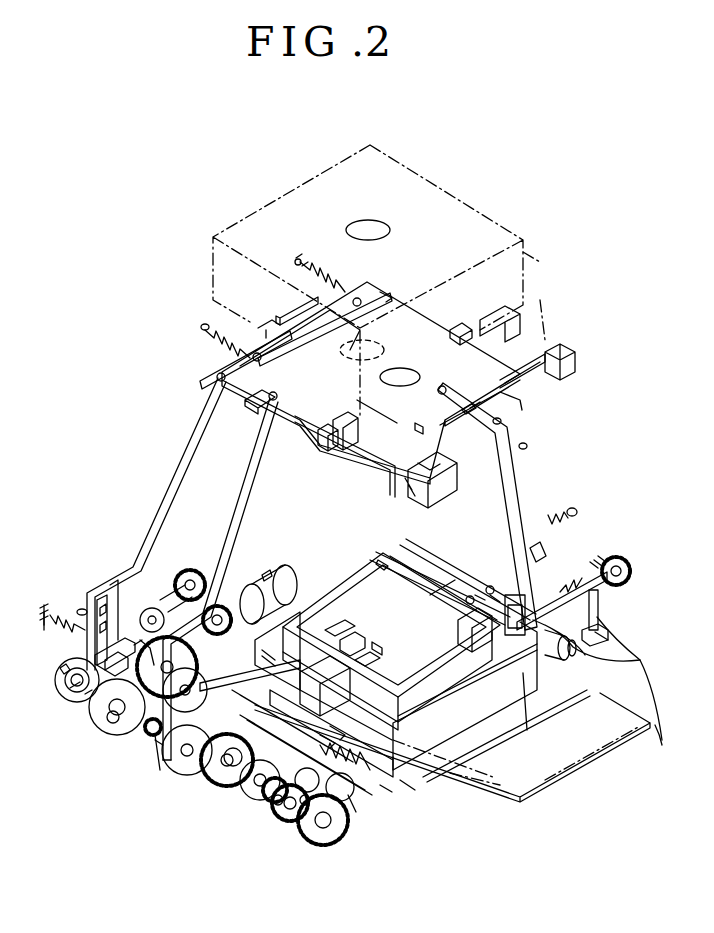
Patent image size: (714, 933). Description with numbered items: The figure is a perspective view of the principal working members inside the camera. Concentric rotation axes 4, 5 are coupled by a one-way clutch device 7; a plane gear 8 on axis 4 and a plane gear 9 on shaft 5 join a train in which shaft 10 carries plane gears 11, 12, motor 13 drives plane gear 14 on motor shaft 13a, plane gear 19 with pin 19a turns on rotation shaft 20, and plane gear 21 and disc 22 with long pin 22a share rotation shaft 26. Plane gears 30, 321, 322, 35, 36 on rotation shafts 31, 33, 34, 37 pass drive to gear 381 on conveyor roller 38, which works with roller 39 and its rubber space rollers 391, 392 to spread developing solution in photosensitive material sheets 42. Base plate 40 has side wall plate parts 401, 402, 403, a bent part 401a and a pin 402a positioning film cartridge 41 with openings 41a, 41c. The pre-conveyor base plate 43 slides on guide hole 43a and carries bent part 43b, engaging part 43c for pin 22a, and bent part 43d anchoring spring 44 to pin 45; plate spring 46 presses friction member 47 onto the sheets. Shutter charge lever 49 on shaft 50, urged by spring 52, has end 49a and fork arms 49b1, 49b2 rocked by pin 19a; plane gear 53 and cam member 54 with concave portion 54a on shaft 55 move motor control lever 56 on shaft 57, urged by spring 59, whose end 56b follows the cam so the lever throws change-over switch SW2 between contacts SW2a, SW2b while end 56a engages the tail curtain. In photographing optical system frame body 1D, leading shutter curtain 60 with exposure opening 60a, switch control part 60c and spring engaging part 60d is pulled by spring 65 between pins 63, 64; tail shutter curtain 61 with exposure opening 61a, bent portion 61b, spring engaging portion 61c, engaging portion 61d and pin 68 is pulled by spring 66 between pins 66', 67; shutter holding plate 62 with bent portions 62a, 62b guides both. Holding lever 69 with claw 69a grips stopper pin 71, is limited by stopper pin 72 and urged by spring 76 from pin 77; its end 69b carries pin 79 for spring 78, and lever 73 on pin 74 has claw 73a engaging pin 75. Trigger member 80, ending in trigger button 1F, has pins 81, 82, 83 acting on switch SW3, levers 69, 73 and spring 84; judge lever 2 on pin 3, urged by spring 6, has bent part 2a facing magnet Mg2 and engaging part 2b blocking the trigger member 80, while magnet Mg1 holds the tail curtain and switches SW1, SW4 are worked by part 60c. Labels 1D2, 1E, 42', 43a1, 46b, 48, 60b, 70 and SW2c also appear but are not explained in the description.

The photographing optical system frame body 1D is at (524, 254).
The opening in housing 1D2 is at (368, 232).
The housing wall 1E is at (540, 318).
The trigger button 1F is at (630, 571).
The judge lever 2 is at (510, 740).
The bent part 2a is at (448, 700).
The engaging part 2b is at (674, 737).
The pin 3 is at (440, 595).
The rotation axis 4 is at (85, 700).
The rotation axis 5 is at (185, 685).
The spring 6 is at (527, 732).
The one-way clutch device 7 is at (150, 668).
The plane gear 8 is at (105, 708).
The plane gear 9 is at (182, 652).
The shaft 10 is at (172, 598).
The plane gear 11 is at (150, 610).
The plane gear 12 is at (193, 572).
The motor 13 is at (272, 602).
The motor shaft 13a is at (264, 573).
The plane gear 14 is at (225, 606).
The plane gear 19 is at (158, 770).
The pin 19a is at (112, 723).
The rotation shaft 20 is at (153, 736).
The plane gear 21 is at (220, 778).
The disc 22 is at (235, 738).
The long pin 22a is at (215, 680).
The rotation shaft 26 is at (183, 765).
The plane gear 30 is at (233, 768).
The rotation shaft 31 is at (250, 788).
The plane gear 321 is at (268, 798).
The plane gear 322 is at (278, 806).
The rotation shaft 33 is at (278, 812).
The rotation shaft 34 is at (303, 792).
The plane gear 35 is at (305, 806).
The plane gear 36 is at (332, 843).
The rotation shaft 37 is at (318, 830).
The photosensitive material conveyor roller 38 is at (630, 666).
The gear 381 is at (356, 812).
The photosensitive material conveyor roller 39 is at (568, 662).
The space roller 391 is at (348, 798).
The space roller 392 is at (578, 660).
The base plate of the film cartridge chamber 40 is at (456, 770).
The side wall plate part 401 is at (527, 690).
The bent part 401a is at (420, 575).
The side wall plate part 402 is at (405, 778).
The pin 402a is at (330, 738).
The side wall plate part 403 is at (322, 578).
The film cartridge 41 is at (446, 705).
The opening 41a is at (493, 690).
The opening 41c is at (356, 575).
The photosensitive material sheets 42 is at (373, 547).
The hidden rail 42' is at (516, 758).
The base plate of the pre-conveyor device 43 is at (380, 690).
The guide hole 43a is at (310, 708).
The tray tab 43a1 is at (340, 733).
The bent part 43b is at (362, 658).
The engaging part 43c is at (265, 688).
The bent part 43d is at (410, 790).
The spring 44 is at (385, 790).
The pin 45 is at (320, 748).
The photosensitive material conveying plate spring 46 is at (330, 605).
The guide stop 46b is at (380, 650).
The friction member 47 is at (343, 625).
The block 48 is at (345, 640).
The rotary shutter charge lever 49 is at (238, 488).
The one end of the shutter charge lever 49a is at (275, 420).
The arm 49b1 is at (165, 762).
The arm 49b2 is at (155, 745).
The shaft 50 is at (118, 580).
The spring 52 is at (115, 665).
The plane gear 53 is at (60, 670).
The disc-shaped cam member 54 is at (65, 680).
The concave portion 54a is at (85, 692).
The rotation shaft 55 is at (70, 690).
The rotary conveyor motor control lever 56 is at (175, 460).
The one end of the motor control lever 56a is at (215, 381).
The other end of the motor control lever 56b is at (80, 632).
The shaft 57 is at (80, 610).
The spring 59 is at (50, 605).
The leading shutter curtain 60 is at (391, 422).
The exposure opening 60a is at (415, 376).
The block 60b is at (318, 434).
The switch control part 60c is at (545, 360).
The spring engaging part 60d is at (262, 330).
The tail shutter curtain 61 is at (500, 395).
The exposure opening 61a is at (375, 352).
The bent portion 61b is at (490, 445).
The spring engaging portion 61c is at (385, 297).
The engaging portion 61d is at (252, 410).
The shutter holding plate 62 is at (205, 380).
The bent portion 62a is at (458, 330).
The bent portion 62b is at (298, 312).
The pin 63 is at (201, 327).
The pin 64 is at (255, 355).
The spring 65 is at (205, 343).
The spring 66 is at (322, 267).
The pin 66' is at (306, 245).
The pin 67 is at (356, 300).
The pin 68 is at (424, 428).
The rotary holding lever 69 is at (525, 478).
The holding claw part 69a is at (438, 390).
The other end of the holding lever 69b is at (468, 598).
The pin 70 is at (501, 421).
The stopper pin 71 is at (470, 412).
The stopper pin 72 is at (527, 446).
The lever 73 is at (512, 595).
The engaging claw 73a is at (545, 548).
The pin 74 is at (515, 608).
The pin 75 is at (545, 590).
The spring 76 is at (548, 515).
The pin 77 is at (572, 508).
The spring 78 is at (492, 598).
The pin 79 is at (478, 595).
The trigger member 80 is at (600, 605).
The pin 81 is at (610, 620).
The pin 82 is at (590, 648).
The spring engaging pin 83 is at (562, 586).
The spring 84 is at (600, 560).
The magnet Mg1 is at (455, 490).
The magnet Mg2 is at (465, 628).
The switch SW1 is at (575, 366).
The change-over switch SW2 is at (100, 600).
The contact SW2a is at (104, 600).
The contact SW2b is at (98, 615).
The switch contact SW2c is at (95, 665).
The trigger switch SW3 is at (612, 642).
The switch SW4 is at (520, 310).